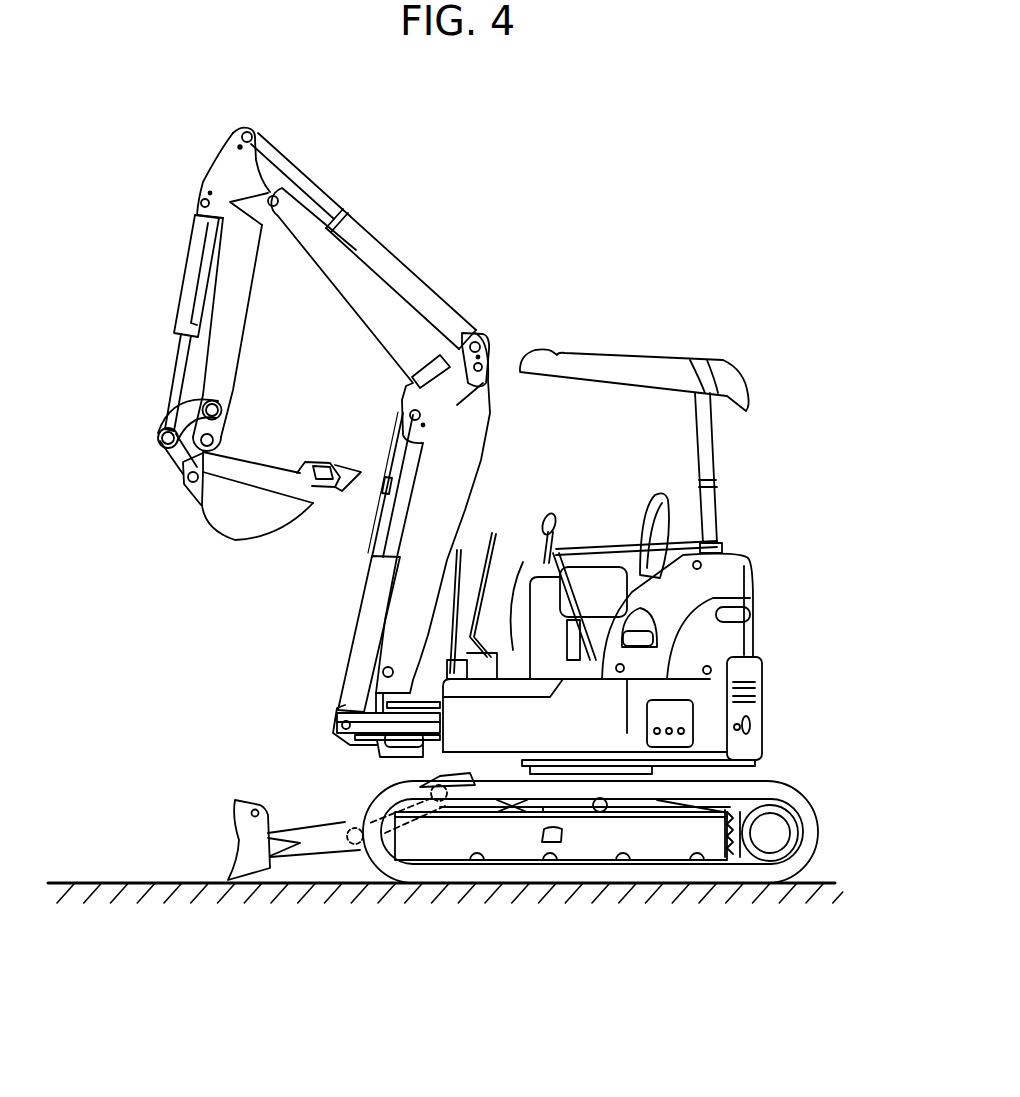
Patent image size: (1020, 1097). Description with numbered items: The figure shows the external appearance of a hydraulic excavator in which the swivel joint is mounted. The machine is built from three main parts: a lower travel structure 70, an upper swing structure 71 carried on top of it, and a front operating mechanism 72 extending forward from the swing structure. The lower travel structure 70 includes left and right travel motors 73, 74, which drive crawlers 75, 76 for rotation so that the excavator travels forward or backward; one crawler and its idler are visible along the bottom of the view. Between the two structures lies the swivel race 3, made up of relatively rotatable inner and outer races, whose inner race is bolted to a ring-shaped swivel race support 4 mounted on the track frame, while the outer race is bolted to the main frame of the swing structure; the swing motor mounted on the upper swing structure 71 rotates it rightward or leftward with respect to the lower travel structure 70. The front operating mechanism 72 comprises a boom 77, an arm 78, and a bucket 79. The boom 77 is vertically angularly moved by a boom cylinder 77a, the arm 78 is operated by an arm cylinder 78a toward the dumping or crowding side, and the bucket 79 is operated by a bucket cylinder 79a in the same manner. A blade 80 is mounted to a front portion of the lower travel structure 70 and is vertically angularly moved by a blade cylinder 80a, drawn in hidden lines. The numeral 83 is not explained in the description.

The swivel race 3 is at (623, 773).
The swivel race support 4 is at (547, 773).
The lower travel structure 70 is at (818, 808).
The upper swing structure 71 is at (790, 625).
The front operating mechanism 72 is at (360, 174).
The left travel motor 73 is at (772, 825).
The right travel motor 74 is at (770, 833).
The crawler 75 is at (777, 867).
The crawler 76 is at (590, 832).
The boom 77 is at (462, 405).
The boom cylinder 77a is at (375, 596).
The arm 78 is at (235, 320).
The arm cylinder 78a is at (415, 285).
The bucket 79 is at (232, 515).
The bucket cylinder 79a is at (197, 273).
The blade 80 is at (238, 799).
The blade cylinder 80a is at (395, 790).
The track frame 83 is at (603, 840).